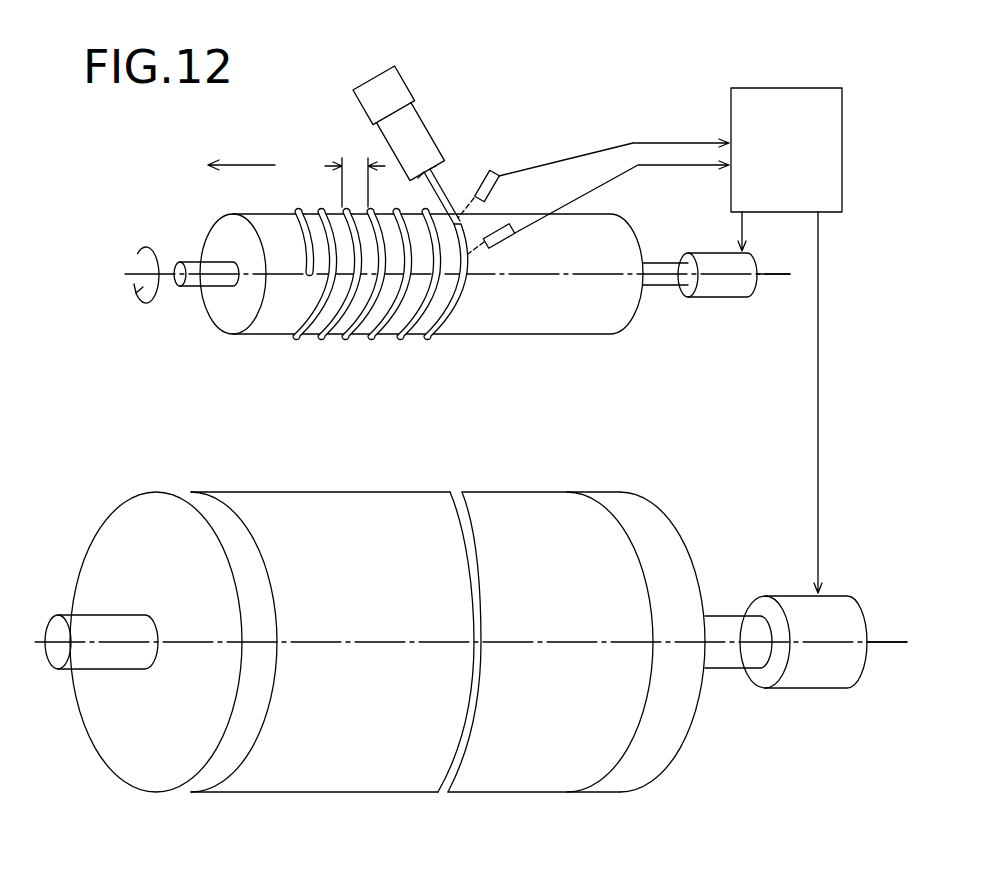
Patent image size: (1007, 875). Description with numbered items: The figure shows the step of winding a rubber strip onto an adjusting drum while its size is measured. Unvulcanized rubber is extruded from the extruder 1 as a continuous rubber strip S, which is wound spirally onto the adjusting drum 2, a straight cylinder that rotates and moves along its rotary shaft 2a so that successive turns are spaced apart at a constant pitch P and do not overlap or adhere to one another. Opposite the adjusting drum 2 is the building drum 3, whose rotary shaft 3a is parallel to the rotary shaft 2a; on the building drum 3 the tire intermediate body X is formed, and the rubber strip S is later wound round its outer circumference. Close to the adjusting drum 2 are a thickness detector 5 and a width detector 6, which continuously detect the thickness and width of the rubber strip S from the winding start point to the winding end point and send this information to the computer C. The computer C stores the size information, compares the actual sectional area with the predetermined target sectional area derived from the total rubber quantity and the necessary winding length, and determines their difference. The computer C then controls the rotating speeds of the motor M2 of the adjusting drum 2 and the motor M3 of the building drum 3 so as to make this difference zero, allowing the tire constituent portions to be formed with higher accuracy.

The extruder 1 is at (410, 127).
The rubber strip S is at (451, 216).
The pitch P is at (355, 171).
The width detector 6 is at (498, 177).
The thickness detector 5 is at (498, 227).
The computer C is at (803, 166).
The adjusting drum 2 is at (610, 322).
The motor of the adjusting drum M2 is at (728, 290).
The rotary shaft of the adjusting drum 2a is at (782, 277).
The building drum 3 is at (670, 547).
The tire intermediate body X is at (513, 508).
The motor of the building drum M3 is at (800, 677).
The rotary shaft of the building drum 3a is at (885, 640).